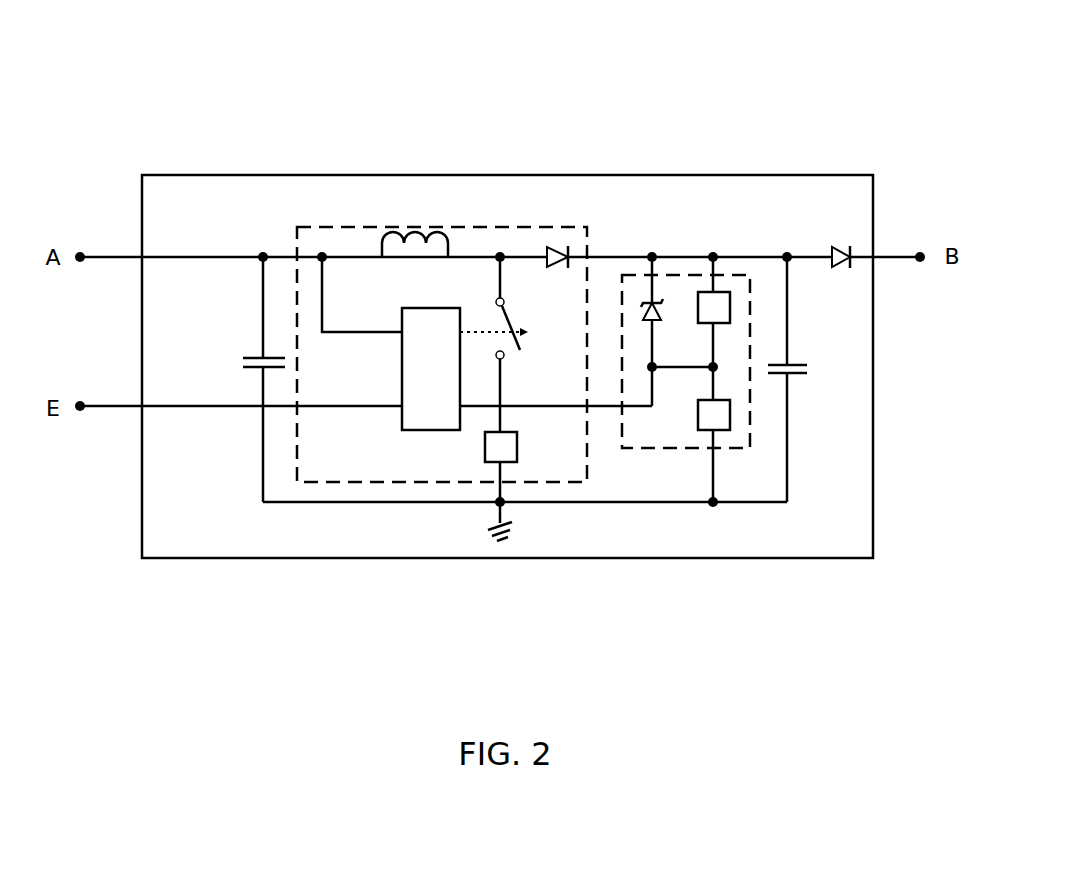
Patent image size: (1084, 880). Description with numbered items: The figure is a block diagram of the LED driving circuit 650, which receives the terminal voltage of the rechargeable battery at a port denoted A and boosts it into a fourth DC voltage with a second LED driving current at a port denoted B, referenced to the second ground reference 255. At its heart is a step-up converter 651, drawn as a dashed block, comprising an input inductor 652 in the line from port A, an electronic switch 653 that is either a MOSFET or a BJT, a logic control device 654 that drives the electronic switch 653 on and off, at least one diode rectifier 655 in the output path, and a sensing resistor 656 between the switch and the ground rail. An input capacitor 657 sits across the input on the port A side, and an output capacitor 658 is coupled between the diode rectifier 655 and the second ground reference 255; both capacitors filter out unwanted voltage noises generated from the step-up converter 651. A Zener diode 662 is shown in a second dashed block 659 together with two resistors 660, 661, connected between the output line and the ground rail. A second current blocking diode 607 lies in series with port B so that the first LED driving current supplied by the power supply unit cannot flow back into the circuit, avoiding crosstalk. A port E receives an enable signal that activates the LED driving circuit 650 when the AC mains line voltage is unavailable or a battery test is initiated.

The LED driving circuit 650 is at (494, 168).
The step-up converter 651 is at (387, 493).
The input inductor 652 is at (420, 240).
The electronic switch 653 is at (513, 343).
The logic control device 654 is at (402, 308).
The diode rectifier 655 is at (562, 245).
The sensing resistor 656 is at (518, 456).
The input capacitor 657 is at (258, 370).
The output capacitor 658 is at (800, 364).
The voltage limiting unit 659 is at (758, 446).
The resistor 660 is at (733, 293).
The resistor 661 is at (722, 433).
The Zener diode 662 is at (658, 305).
The second current blocking diode 607 is at (838, 248).
The second ground reference 255 is at (495, 532).